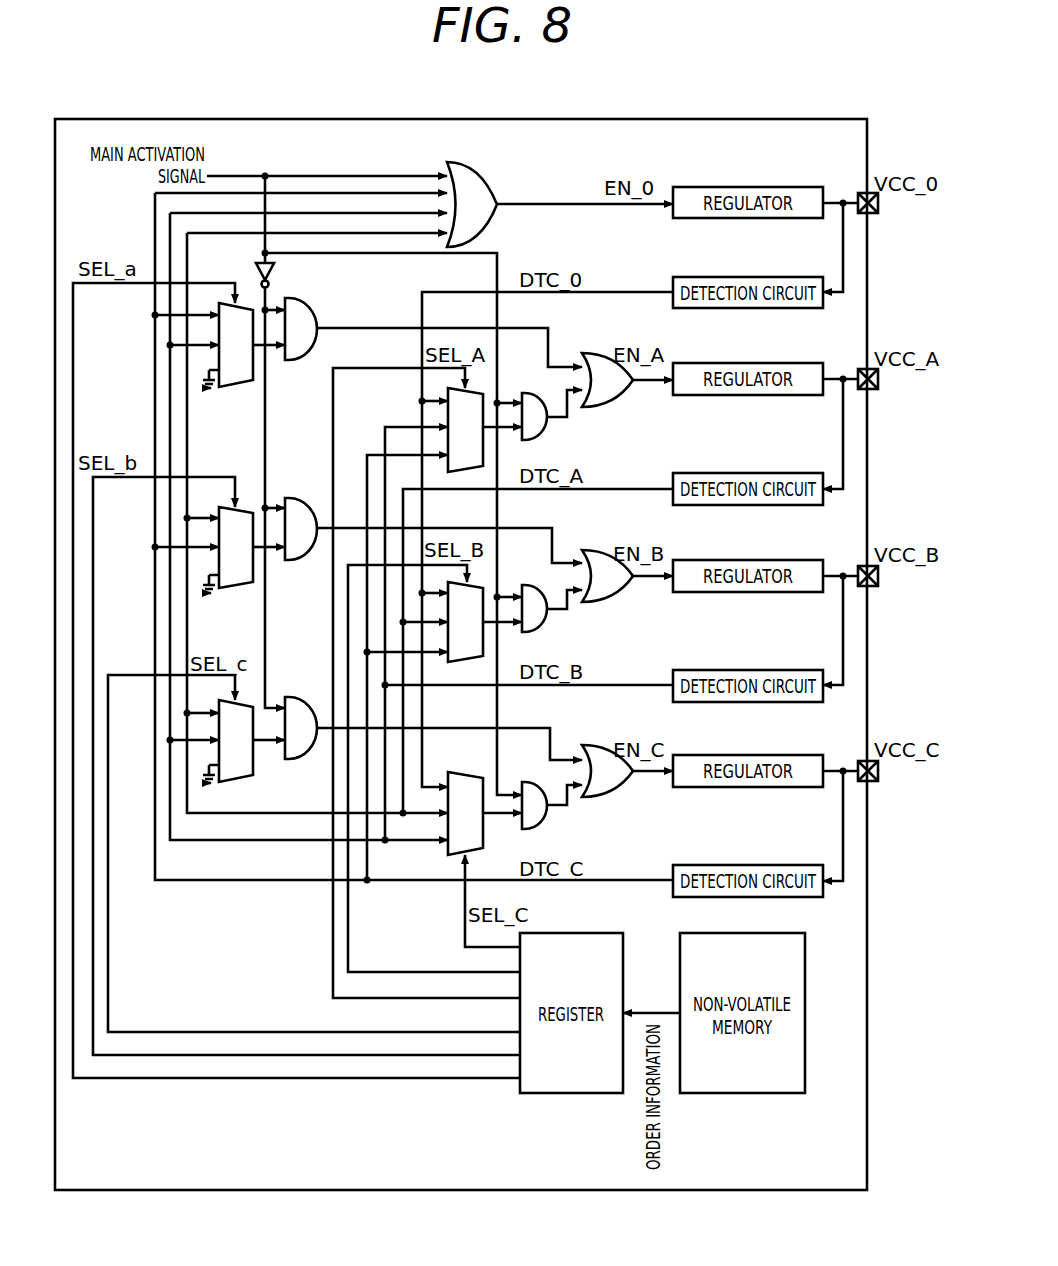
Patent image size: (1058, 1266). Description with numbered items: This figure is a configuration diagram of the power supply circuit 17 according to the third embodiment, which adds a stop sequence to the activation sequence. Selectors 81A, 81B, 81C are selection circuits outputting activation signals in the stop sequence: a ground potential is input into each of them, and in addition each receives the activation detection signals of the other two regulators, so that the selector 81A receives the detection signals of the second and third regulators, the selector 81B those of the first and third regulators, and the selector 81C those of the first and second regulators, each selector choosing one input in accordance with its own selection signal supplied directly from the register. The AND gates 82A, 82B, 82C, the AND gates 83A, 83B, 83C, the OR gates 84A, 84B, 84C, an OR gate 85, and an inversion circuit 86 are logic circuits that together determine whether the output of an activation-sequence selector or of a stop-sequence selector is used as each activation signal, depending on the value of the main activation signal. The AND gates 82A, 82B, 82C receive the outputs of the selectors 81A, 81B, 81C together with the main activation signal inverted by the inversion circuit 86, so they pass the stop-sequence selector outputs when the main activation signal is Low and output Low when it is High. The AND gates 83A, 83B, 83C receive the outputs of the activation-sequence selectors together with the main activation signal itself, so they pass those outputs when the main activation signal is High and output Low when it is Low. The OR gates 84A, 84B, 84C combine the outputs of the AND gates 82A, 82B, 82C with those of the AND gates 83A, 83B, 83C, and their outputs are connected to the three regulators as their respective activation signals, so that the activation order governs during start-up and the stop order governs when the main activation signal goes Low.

The power supply circuit 17 is at (255, 118).
The OR gate 85 is at (494, 182).
The inversion circuit 86 is at (271, 285).
The selector 81A is at (241, 384).
The selector 81B is at (241, 583).
The selector 81C is at (241, 777).
The AND gate 82A is at (294, 359).
The AND gate 82B is at (287, 497).
The AND gate 82C is at (287, 696).
The AND gate 83A is at (549, 433).
The AND gate 83B is at (549, 625).
The AND gate 83C is at (549, 821).
The OR gate 84A is at (624, 394).
The OR gate 84B is at (624, 590).
The OR gate 84C is at (624, 785).